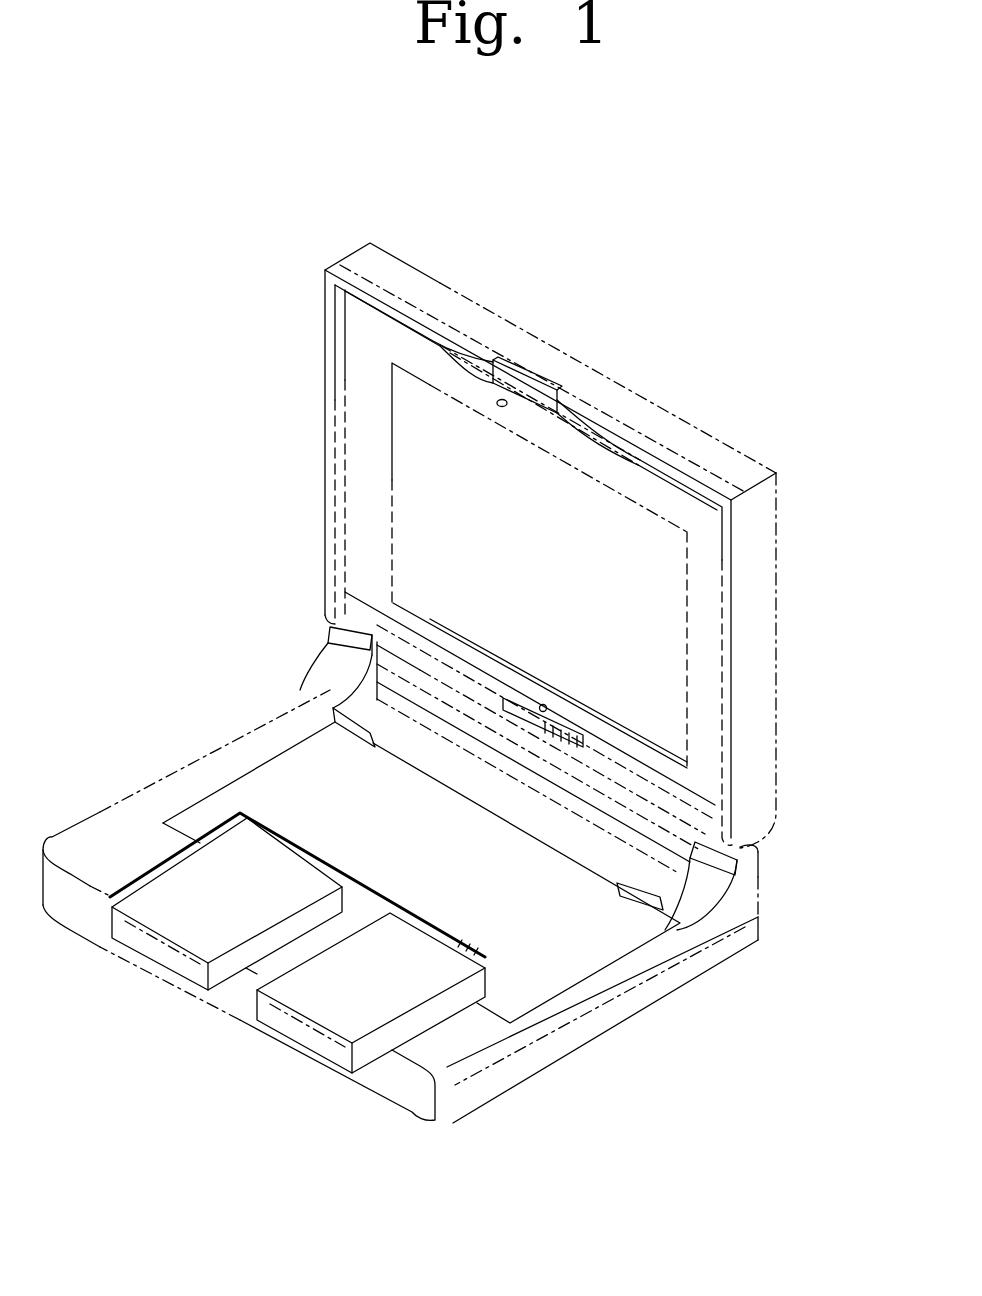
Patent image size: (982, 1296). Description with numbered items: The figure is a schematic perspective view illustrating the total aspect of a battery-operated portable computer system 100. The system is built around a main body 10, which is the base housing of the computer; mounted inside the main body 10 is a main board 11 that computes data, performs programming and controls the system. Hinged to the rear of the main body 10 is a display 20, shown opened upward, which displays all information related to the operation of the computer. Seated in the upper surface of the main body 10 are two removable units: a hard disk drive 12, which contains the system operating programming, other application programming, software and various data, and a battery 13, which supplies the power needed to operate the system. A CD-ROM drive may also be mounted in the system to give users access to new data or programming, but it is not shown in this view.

The portable computer 100 is at (152, 455).
The main body 10 is at (745, 947).
The main board 11 is at (290, 778).
The hard disk drive 12 is at (158, 943).
The battery 13 is at (285, 1028).
The display 20 is at (640, 602).